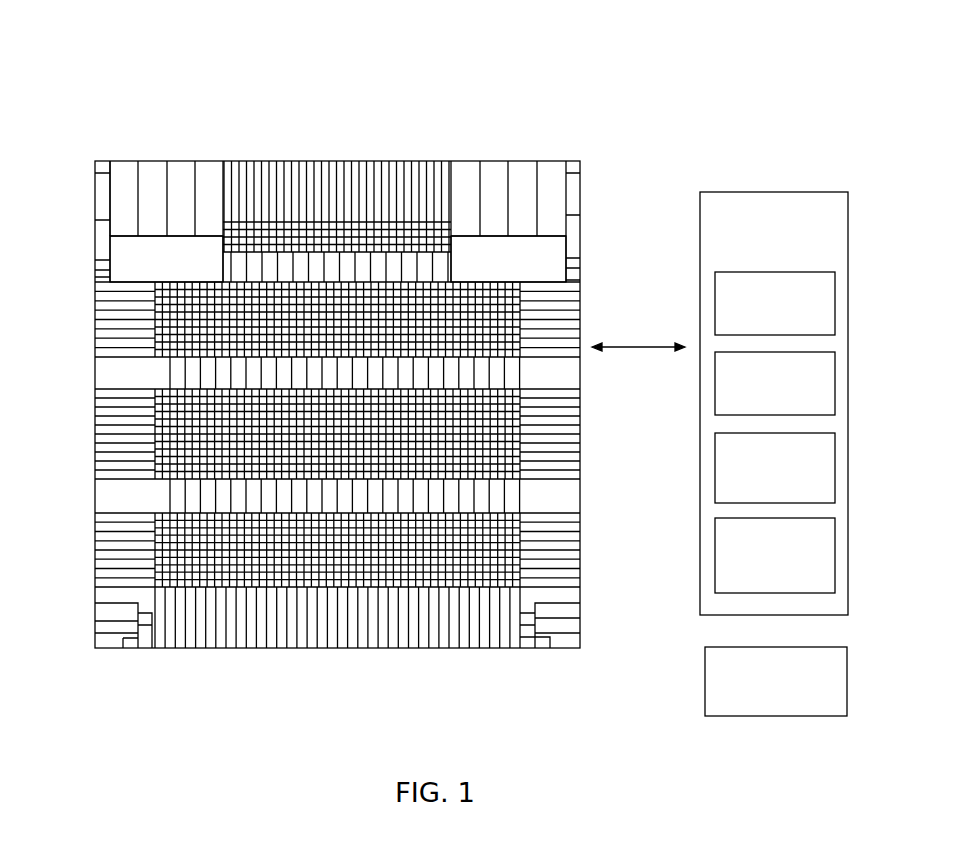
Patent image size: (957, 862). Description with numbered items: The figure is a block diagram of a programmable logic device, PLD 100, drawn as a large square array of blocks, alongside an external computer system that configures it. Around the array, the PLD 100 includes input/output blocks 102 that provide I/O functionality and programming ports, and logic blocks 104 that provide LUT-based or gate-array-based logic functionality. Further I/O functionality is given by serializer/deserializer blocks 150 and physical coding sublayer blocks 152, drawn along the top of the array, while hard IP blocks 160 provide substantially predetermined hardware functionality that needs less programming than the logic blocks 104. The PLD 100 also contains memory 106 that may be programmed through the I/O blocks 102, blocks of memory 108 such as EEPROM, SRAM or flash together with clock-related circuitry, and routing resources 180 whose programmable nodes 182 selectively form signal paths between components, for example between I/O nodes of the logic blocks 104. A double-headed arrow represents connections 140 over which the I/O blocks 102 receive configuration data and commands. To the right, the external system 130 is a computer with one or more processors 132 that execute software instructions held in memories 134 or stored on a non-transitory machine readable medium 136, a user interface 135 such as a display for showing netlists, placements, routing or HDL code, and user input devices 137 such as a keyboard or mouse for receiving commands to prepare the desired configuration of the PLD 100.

The programmable logic device 100 is at (210, 92).
The input/output blocks 102 is at (105, 326).
The logic blocks 104 is at (487, 447).
The memory 106 is at (487, 497).
The blocks of memory 108 is at (102, 210).
The external system 130 is at (788, 260).
The processors 132 is at (788, 324).
The memories 134 is at (788, 405).
The user interface 135 is at (788, 500).
The non-transitory machine readable mediums 136 is at (828, 711).
The user input devices 137 is at (788, 588).
The connections 140 is at (641, 345).
The serializer/deserializer blocks 150 is at (225, 156).
The physical coding sublayer blocks 152 is at (117, 250).
The hard intellectual property core blocks 160 is at (570, 373).
The routing resources 180 is at (207, 580).
The nodes 182 is at (403, 582).